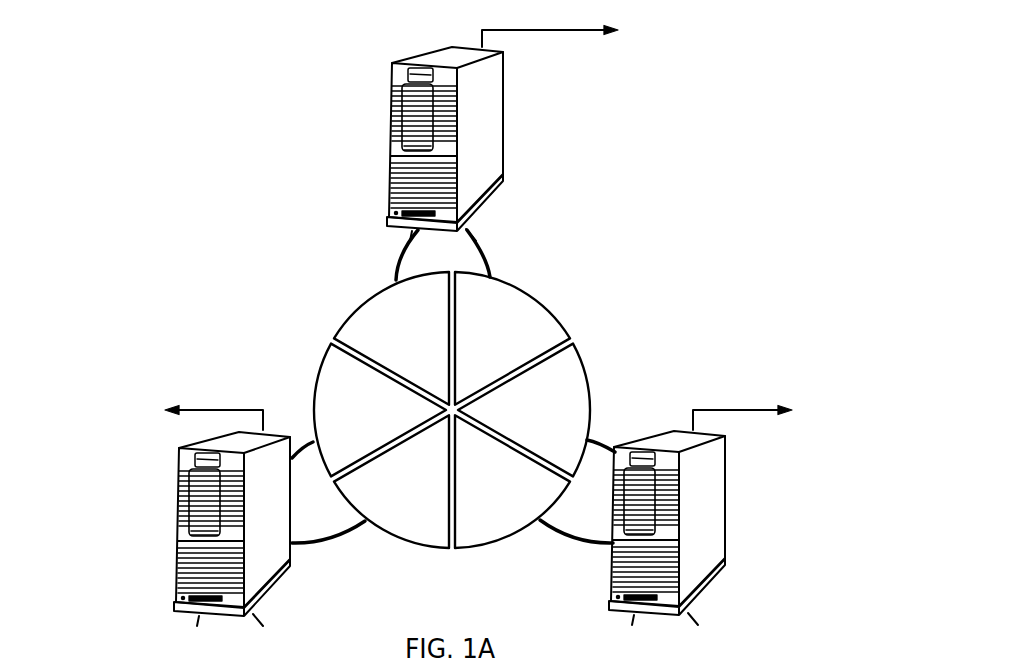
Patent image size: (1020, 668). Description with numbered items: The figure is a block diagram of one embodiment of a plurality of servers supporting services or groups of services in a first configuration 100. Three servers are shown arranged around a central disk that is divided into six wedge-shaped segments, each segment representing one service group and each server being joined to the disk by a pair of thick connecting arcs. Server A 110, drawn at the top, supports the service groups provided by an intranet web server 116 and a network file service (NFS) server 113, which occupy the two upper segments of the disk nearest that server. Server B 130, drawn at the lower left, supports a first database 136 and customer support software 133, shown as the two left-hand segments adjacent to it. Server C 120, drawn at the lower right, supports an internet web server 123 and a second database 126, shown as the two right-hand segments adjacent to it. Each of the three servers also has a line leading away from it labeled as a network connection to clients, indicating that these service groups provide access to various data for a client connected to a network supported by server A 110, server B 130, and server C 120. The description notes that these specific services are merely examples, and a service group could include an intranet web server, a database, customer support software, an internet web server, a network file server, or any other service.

The first configuration 100 is at (690, 237).
The server A 110 is at (392, 107).
The server C 120 is at (728, 543).
The server B 130 is at (177, 582).
The network file service (NFS) server 113 is at (537, 298).
The intranet web server 116 is at (357, 298).
The internet web server 123 is at (588, 380).
The second database 126 is at (480, 547).
The customer support software 133 is at (410, 543).
The first database 136 is at (315, 370).